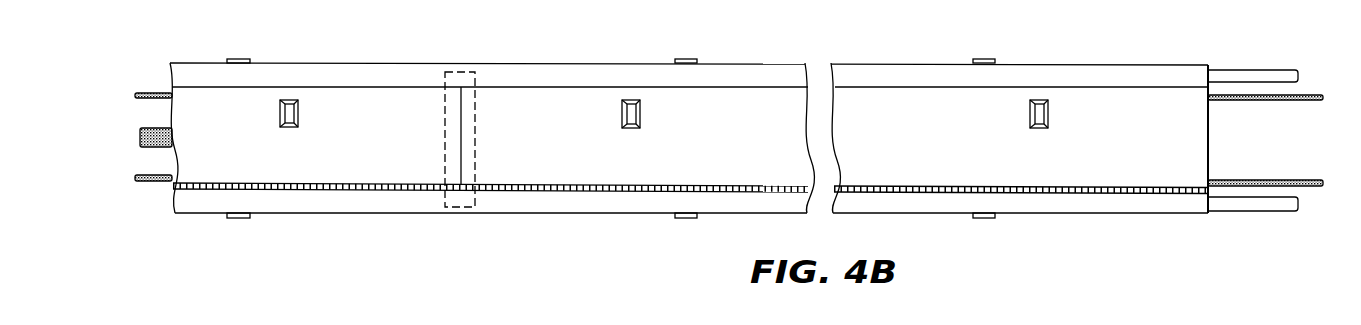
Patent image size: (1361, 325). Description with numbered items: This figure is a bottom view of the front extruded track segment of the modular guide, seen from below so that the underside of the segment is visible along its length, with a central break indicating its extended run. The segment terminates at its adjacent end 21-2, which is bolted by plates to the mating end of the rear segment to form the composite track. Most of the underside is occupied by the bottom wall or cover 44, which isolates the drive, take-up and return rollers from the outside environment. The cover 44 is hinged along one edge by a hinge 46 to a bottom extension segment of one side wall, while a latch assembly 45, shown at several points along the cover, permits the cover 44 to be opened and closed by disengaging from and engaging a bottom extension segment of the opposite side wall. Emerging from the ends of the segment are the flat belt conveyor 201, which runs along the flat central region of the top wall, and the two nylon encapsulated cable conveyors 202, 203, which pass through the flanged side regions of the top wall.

The adjacent end of front track segment 21-2 is at (545, 73).
The bottom wall or cover 44 is at (369, 100).
The latch assembly 45 is at (280, 113).
The hinge 46 is at (600, 190).
The flat belt conveyor 201 is at (142, 136).
The nylon encapsulated cable conveyor 202 is at (153, 185).
The nylon encapsulated cable conveyor 203 is at (148, 90).